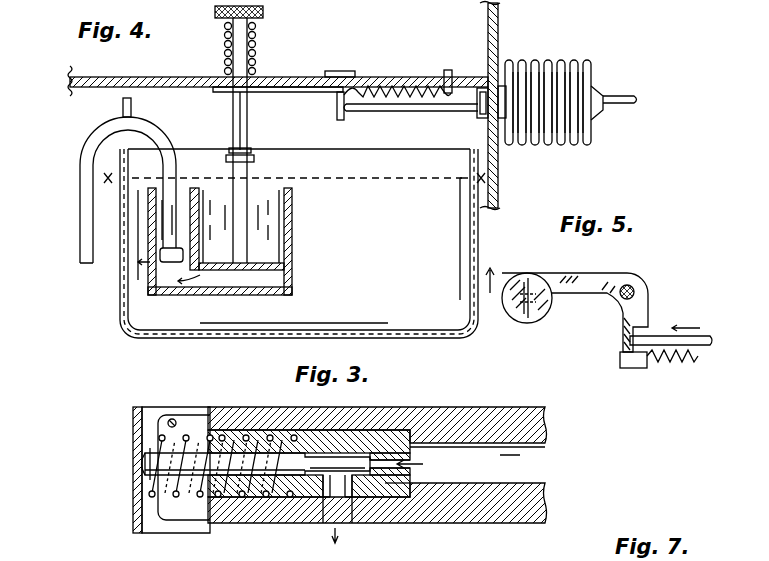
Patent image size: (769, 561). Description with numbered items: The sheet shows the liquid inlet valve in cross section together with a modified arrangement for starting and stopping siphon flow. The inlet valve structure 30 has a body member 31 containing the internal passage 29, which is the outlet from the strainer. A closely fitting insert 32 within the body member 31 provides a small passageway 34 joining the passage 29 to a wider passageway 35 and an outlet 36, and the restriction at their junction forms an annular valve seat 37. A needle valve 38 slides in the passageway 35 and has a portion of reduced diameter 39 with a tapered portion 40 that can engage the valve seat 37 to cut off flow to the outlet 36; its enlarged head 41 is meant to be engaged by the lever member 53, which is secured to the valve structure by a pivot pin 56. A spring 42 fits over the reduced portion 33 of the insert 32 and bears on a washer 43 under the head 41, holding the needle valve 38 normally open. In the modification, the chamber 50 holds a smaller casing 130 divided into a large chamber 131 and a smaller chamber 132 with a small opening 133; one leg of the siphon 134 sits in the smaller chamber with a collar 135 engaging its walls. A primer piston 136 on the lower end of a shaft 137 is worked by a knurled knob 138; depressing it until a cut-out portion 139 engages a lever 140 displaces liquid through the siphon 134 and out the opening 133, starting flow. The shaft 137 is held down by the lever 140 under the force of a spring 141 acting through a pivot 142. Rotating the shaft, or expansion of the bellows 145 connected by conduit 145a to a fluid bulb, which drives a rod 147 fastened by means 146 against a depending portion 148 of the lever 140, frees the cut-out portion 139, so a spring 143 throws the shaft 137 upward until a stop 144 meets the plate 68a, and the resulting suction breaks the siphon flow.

In FIG. 3, the internal passage 29 is at (524, 460).
In FIG. 3, the inlet valve structure 30 is at (422, 400).
In FIG. 3, the body member 31 is at (262, 413).
In FIG. 3, the insert 32 is at (391, 490).
In FIG. 3, the reduced portion of the insert 33 is at (255, 498).
In FIG. 3, the small passageway 34 is at (422, 469).
In FIG. 3, the wider passageway 35 is at (310, 456).
In FIG. 3, the outlet 36 is at (325, 508).
In FIG. 3, the annular valve seat 37 is at (374, 460).
In FIG. 3, the needle valve 38 is at (222, 434).
In FIG. 3, the portion of reduced diameter 39 is at (305, 436).
In FIG. 3, the tapered portion 40 is at (368, 493).
In FIG. 3, the enlarged head 41 is at (133, 459).
In FIG. 3, the spring 42 is at (181, 502).
In FIG. 3, the washer 43 is at (153, 436).
In FIG. 4, the chamber 50 is at (120, 291).
In FIG. 3, the lever member 53 is at (133, 494).
In FIG. 3, the pivot pin 56 is at (172, 418).
In FIG. 4, the plate 68a is at (134, 77).
In FIG. 4, the casing 130 is at (294, 246).
In FIG. 4, the large chamber 131 is at (217, 192).
In FIG. 4, the smaller chamber 132 is at (178, 290).
In FIG. 4, the opening 133 is at (148, 270).
In FIG. 4, the siphon 134 is at (80, 217).
In FIG. 4, the collar 135 is at (220, 226).
In FIG. 4, the piston 136 is at (246, 270).
In FIG. 4, the shaft 137 is at (252, 170).
In FIG. 5, the shaft 137 is at (546, 315).
In FIG. 4, the knurled knob 138 is at (263, 14).
In FIG. 5, the knurled knob 138 is at (516, 318).
In FIG. 4, the cut-out portion 139 is at (248, 108).
In FIG. 5, the cut-out portion 139 is at (521, 286).
In FIG. 4, the lever 140 is at (290, 100).
In FIG. 5, the lever 140 is at (588, 274).
In FIG. 4, the spring 141 is at (396, 80).
In FIG. 5, the spring 141 is at (666, 365).
In FIG. 4, the pivot 142 is at (338, 71).
In FIG. 5, the pivot 142 is at (645, 288).
In FIG. 4, the spring 143 is at (222, 54).
In FIG. 4, the stop 144 is at (227, 155).
In FIG. 4, the bellows 145 is at (538, 62).
In FIG. 4, the conduit 145a is at (620, 101).
In FIG. 4, the fastening means 146 is at (485, 119).
In FIG. 4, the rod 147 is at (391, 112).
In FIG. 5, the rod 147 is at (710, 334).
In FIG. 4, the depending portion 148 is at (338, 119).
In FIG. 5, the depending portion 148 is at (623, 346).